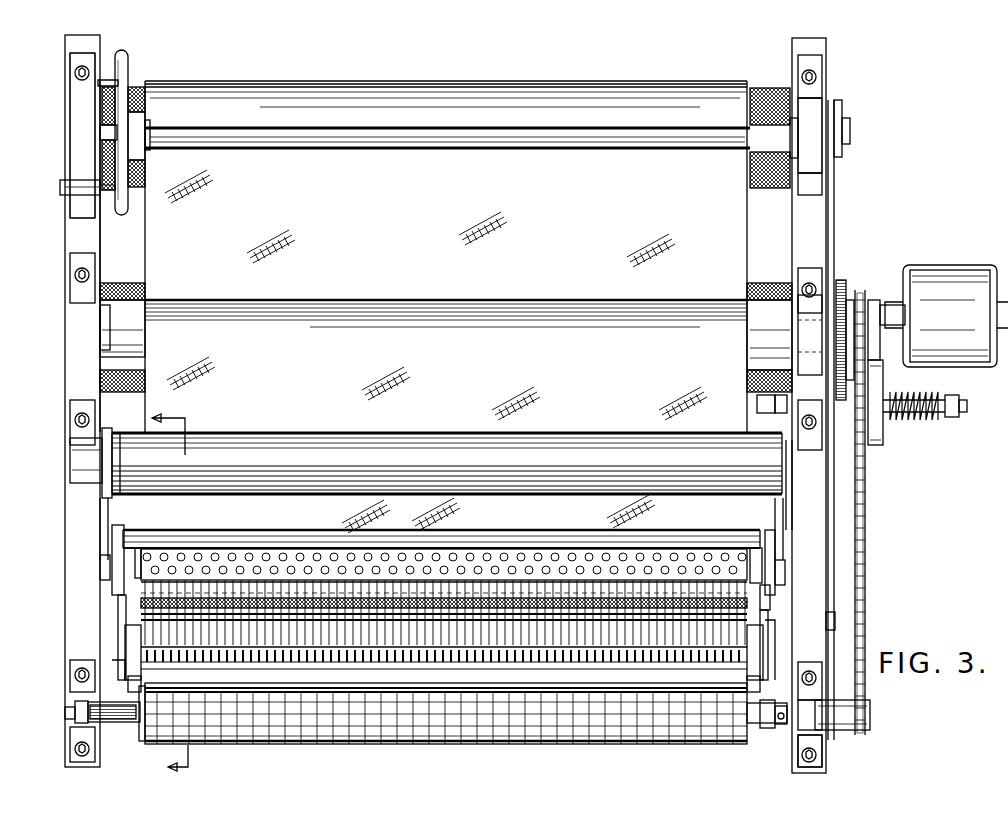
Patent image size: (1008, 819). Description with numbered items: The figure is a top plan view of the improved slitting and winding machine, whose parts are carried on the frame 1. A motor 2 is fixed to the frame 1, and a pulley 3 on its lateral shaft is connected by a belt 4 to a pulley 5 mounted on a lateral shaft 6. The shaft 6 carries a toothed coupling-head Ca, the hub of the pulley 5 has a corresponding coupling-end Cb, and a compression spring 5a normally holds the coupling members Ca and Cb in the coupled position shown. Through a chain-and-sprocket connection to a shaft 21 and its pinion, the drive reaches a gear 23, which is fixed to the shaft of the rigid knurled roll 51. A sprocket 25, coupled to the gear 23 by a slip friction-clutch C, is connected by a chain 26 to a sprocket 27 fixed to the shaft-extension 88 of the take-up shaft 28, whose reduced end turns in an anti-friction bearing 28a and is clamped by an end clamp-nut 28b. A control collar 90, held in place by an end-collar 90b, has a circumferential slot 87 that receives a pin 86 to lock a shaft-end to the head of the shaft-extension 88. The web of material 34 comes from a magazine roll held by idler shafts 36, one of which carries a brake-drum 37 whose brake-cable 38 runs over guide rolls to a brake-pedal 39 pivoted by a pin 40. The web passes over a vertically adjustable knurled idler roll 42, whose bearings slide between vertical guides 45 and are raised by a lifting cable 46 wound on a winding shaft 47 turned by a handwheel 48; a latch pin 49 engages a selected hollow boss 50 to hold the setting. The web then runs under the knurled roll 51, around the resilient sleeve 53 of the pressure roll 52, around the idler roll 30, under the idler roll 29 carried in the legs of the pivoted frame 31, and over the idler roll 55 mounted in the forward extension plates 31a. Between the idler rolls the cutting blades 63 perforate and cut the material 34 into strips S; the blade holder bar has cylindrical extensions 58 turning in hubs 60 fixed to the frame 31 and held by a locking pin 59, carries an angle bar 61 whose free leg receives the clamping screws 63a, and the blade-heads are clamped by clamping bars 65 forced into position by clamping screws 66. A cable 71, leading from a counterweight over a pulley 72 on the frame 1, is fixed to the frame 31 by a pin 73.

The frame 1 is at (66, 590).
The motor 2 is at (946, 267).
The pulley 3 is at (892, 330).
The belt 4 is at (878, 291).
The pulley 5 is at (880, 441).
The compression spring 5a is at (899, 415).
The lateral shaft 6 is at (929, 419).
The shaft 21 is at (788, 516).
The gear 23 is at (842, 290).
The sprocket 25 is at (861, 292).
The chain 26 is at (866, 487).
The sprocket 27 is at (859, 732).
The take-up shaft 28 is at (118, 723).
The anti-friction bearing 28a is at (67, 720).
The end clamp-nut 28b is at (76, 711).
The idler roll 29 is at (385, 531).
The idler roll 30 is at (332, 436).
The frame 31 is at (119, 527).
The forward extension plates 31a is at (120, 594).
The material 34 is at (212, 82).
The idler shafts 36 is at (850, 141).
The brake-drum 37 is at (843, 113).
The brake-cable 38 is at (834, 236).
The brake-pedal 39 is at (770, 595).
The pivot pin 40 is at (832, 631).
The knurled idler roll 42 is at (137, 86).
The vertical guides 45 is at (78, 101).
The lifting cable 46 is at (104, 130).
The winding shaft 47 is at (463, 149).
The handwheel 48 is at (128, 54).
The latch pin 49 is at (105, 197).
The hollow bosses 50 is at (100, 85).
The knurled roll 51 is at (111, 283).
The pressure roll 52 is at (769, 335).
The sleeve 53 is at (102, 343).
The idler roll 55 is at (126, 633).
The cylindrical extensions 58 is at (130, 683).
The locking pin 59 is at (139, 556).
The hubs 60 is at (751, 556).
The angle bar 61 is at (529, 549).
The cutting blades 63 is at (140, 663).
The clamping screw 63a is at (261, 558).
The clamping bar 65 is at (141, 618).
The clamping screw 66 is at (141, 604).
The cable 71 is at (100, 504).
The pulley 72 is at (100, 441).
The pin 73 is at (100, 567).
The pin 86 is at (80, 299).
The slot 87 is at (765, 729).
The shaft-extension 88 is at (805, 768).
The control collar 90 is at (780, 727).
The end-collar 90b is at (784, 723).
The slip friction-clutch C is at (856, 323).
The toothed coupling-head Ca is at (758, 404).
The coupling-end Cb is at (777, 415).
The strips S is at (373, 745).